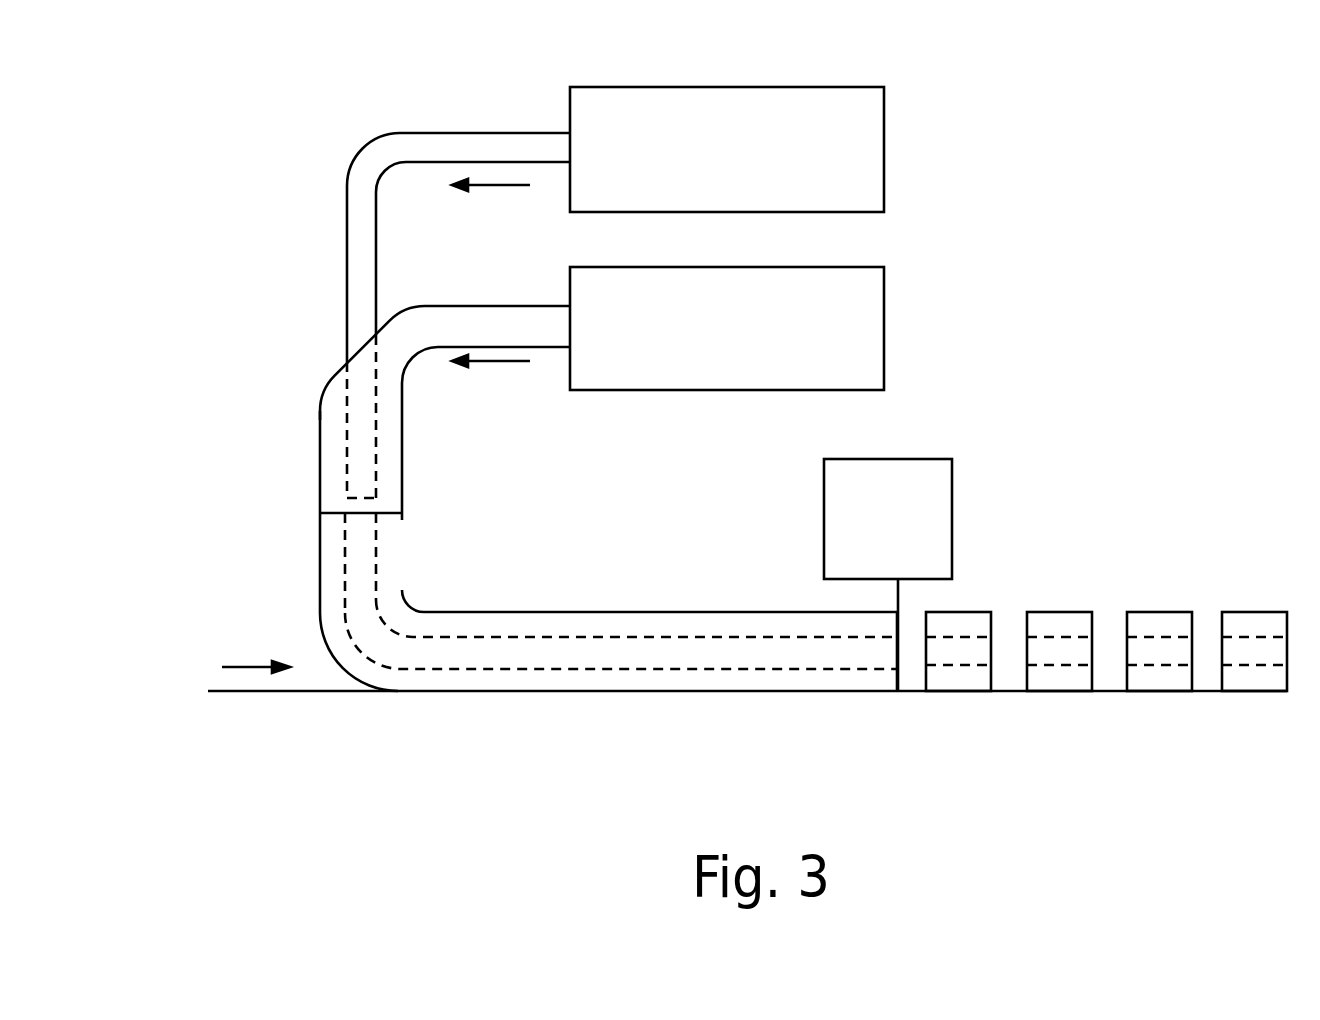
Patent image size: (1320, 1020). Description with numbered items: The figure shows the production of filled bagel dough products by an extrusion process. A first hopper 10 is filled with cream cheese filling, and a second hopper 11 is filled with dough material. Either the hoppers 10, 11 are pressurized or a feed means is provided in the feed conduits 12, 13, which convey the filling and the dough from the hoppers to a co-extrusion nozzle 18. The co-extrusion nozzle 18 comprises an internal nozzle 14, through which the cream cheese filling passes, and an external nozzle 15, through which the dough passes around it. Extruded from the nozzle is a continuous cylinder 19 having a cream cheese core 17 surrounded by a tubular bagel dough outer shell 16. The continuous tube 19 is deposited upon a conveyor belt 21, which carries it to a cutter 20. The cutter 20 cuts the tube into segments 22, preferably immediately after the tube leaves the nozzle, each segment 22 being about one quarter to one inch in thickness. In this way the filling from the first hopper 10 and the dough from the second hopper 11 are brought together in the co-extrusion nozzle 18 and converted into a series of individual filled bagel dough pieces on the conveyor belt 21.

The first hopper 10 is at (868, 140).
The second hopper 11 is at (868, 315).
The feed conduit 12 is at (467, 142).
The feed conduit 13 is at (458, 317).
The internal nozzle 14 is at (360, 470).
The external nozzle 15 is at (386, 498).
The tubular bagel dough outer shell 16 is at (385, 563).
The cream cheese core 17 is at (377, 632).
The co-extrusion nozzle 18 is at (307, 460).
The continuous cylinder 19 is at (688, 602).
The cutter 20 is at (939, 499).
The conveyor belt 21 is at (247, 691).
The segments 22 is at (960, 598).